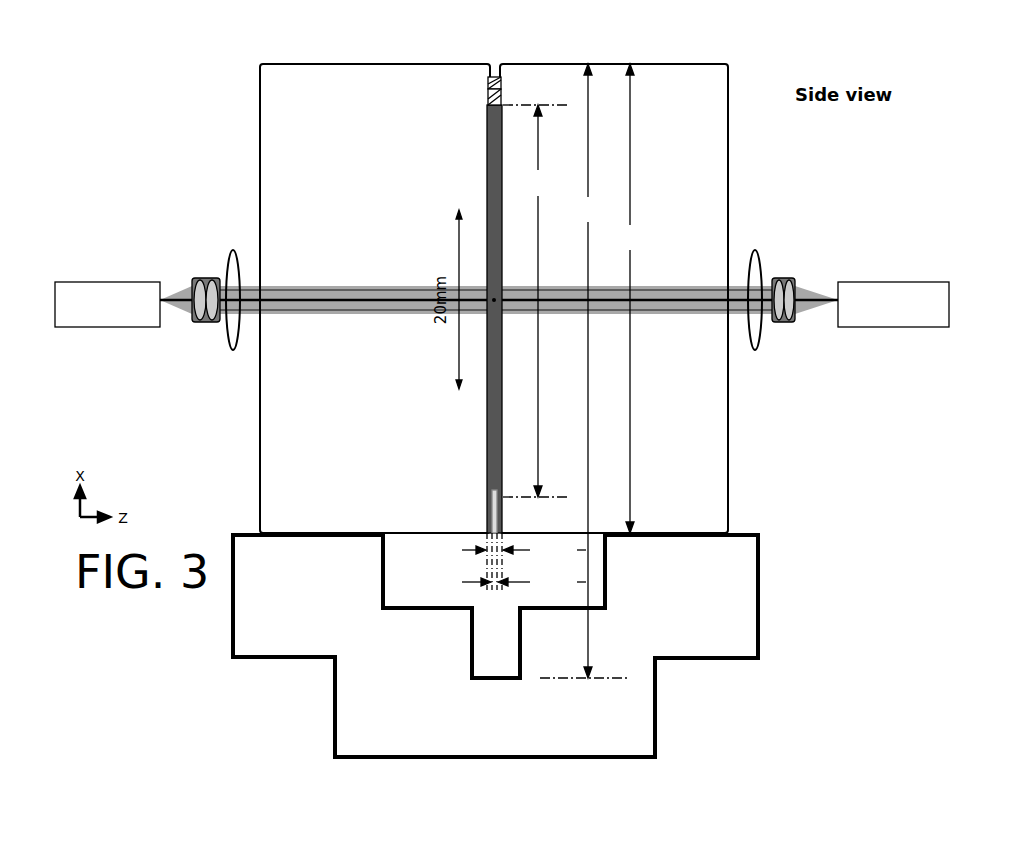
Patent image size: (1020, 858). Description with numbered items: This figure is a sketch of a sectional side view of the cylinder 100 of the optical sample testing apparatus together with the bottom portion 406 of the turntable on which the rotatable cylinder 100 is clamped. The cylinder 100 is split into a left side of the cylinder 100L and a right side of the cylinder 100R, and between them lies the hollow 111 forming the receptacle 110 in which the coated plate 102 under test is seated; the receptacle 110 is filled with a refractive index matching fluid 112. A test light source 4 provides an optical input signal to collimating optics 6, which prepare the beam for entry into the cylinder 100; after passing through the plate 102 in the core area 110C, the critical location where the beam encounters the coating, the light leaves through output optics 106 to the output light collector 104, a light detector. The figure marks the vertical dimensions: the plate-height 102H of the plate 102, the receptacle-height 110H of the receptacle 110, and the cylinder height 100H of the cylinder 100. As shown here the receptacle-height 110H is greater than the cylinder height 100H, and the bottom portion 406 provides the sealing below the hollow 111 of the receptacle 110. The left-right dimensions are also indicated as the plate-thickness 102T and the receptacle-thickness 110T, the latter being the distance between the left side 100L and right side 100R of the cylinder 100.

The test light source 4 is at (107, 304).
The collimating optics 6 is at (205, 220).
The cylinder 100 is at (445, 298).
The left side of the cylinder 100L is at (375, 298).
The right side of the cylinder 100R is at (614, 298).
The coated plate 102 is at (487, 432).
The output light collector 104 is at (893, 304).
The output optics 106 is at (777, 212).
The receptacle 110 is at (494, 515).
The hollow 111 is at (489, 80).
The refractive index matching fluid 112 is at (489, 93).
The bottom portion 406 is at (495, 646).
The plate-height 102H is at (538, 301).
The receptacle-height 110H is at (590, 371).
The cylinder height 100H is at (632, 298).
The core area 110C is at (472, 332).
The receptacle-thickness 110T is at (524, 550).
The plate-thickness 102T is at (524, 582).